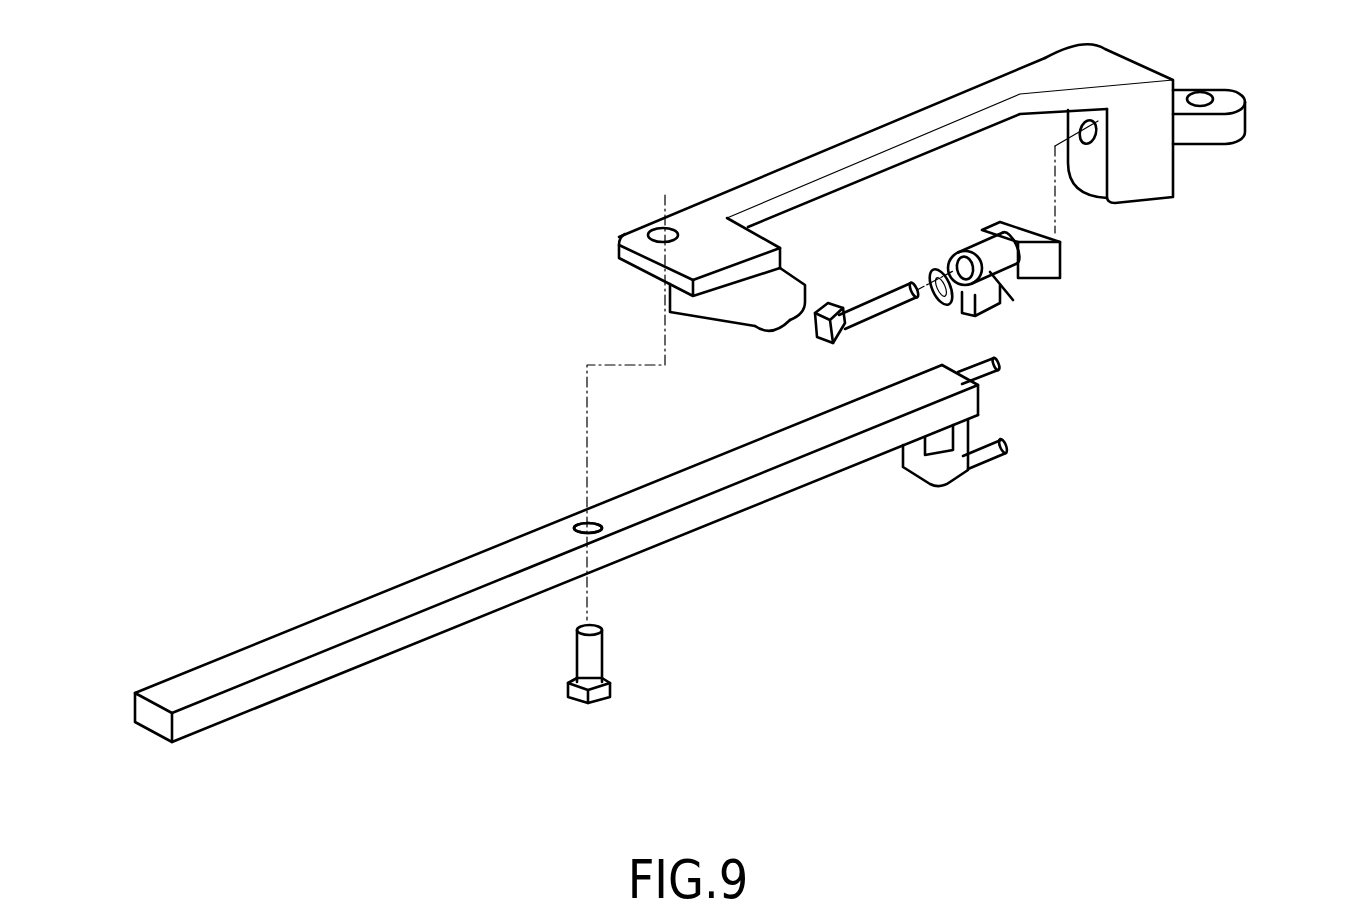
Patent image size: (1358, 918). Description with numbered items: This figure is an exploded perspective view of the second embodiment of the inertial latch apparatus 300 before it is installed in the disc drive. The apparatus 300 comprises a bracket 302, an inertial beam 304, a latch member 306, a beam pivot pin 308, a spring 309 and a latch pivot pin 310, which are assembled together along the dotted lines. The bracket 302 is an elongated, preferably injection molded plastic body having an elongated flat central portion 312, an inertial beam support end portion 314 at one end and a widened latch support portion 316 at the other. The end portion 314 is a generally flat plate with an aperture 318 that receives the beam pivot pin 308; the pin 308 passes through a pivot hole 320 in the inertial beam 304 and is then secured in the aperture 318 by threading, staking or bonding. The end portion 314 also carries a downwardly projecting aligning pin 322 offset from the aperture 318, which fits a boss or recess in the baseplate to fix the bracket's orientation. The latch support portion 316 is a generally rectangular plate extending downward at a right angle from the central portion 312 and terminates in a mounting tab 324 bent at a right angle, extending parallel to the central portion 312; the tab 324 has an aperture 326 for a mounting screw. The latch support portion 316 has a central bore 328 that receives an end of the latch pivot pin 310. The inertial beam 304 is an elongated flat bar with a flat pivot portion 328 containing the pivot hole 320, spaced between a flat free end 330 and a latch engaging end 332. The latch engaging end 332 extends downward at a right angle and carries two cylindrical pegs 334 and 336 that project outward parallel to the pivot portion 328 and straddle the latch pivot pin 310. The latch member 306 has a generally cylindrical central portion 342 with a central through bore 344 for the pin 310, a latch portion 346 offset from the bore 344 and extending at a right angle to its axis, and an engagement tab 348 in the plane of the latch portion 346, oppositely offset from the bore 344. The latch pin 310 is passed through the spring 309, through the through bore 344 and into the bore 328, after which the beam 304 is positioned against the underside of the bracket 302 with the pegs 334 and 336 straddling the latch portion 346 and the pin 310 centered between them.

The latch apparatus 300 is at (1126, 640).
The bracket 302 is at (876, 114).
The inertial beam 304 is at (580, 549).
The latch member 306 is at (1074, 258).
The beam pivot pin 308 is at (602, 702).
The spring 309 is at (934, 262).
The latch pivot pin 310 is at (867, 303).
The central portion 312 is at (947, 99).
The inertial beam support end portion 314 is at (673, 264).
The latch support portion 316 is at (1113, 55).
The aperture 318 is at (662, 232).
The pivot hole 320 is at (585, 524).
The aligning pin 322 is at (785, 328).
The mounting tab 324 is at (1261, 94).
The aperture 326 is at (1213, 97).
The central bore / flat pivot portion 328 is at (1082, 127).
The flat free end 330 is at (147, 712).
The latch engaging end 332 is at (917, 470).
The pin or peg 334 is at (995, 375).
The pin or peg 336 is at (992, 458).
The cylindrical central portion 342 is at (1000, 287).
The through bore 344 is at (1035, 290).
The latch portion 346 is at (1058, 237).
The engagement tab 348 is at (975, 320).